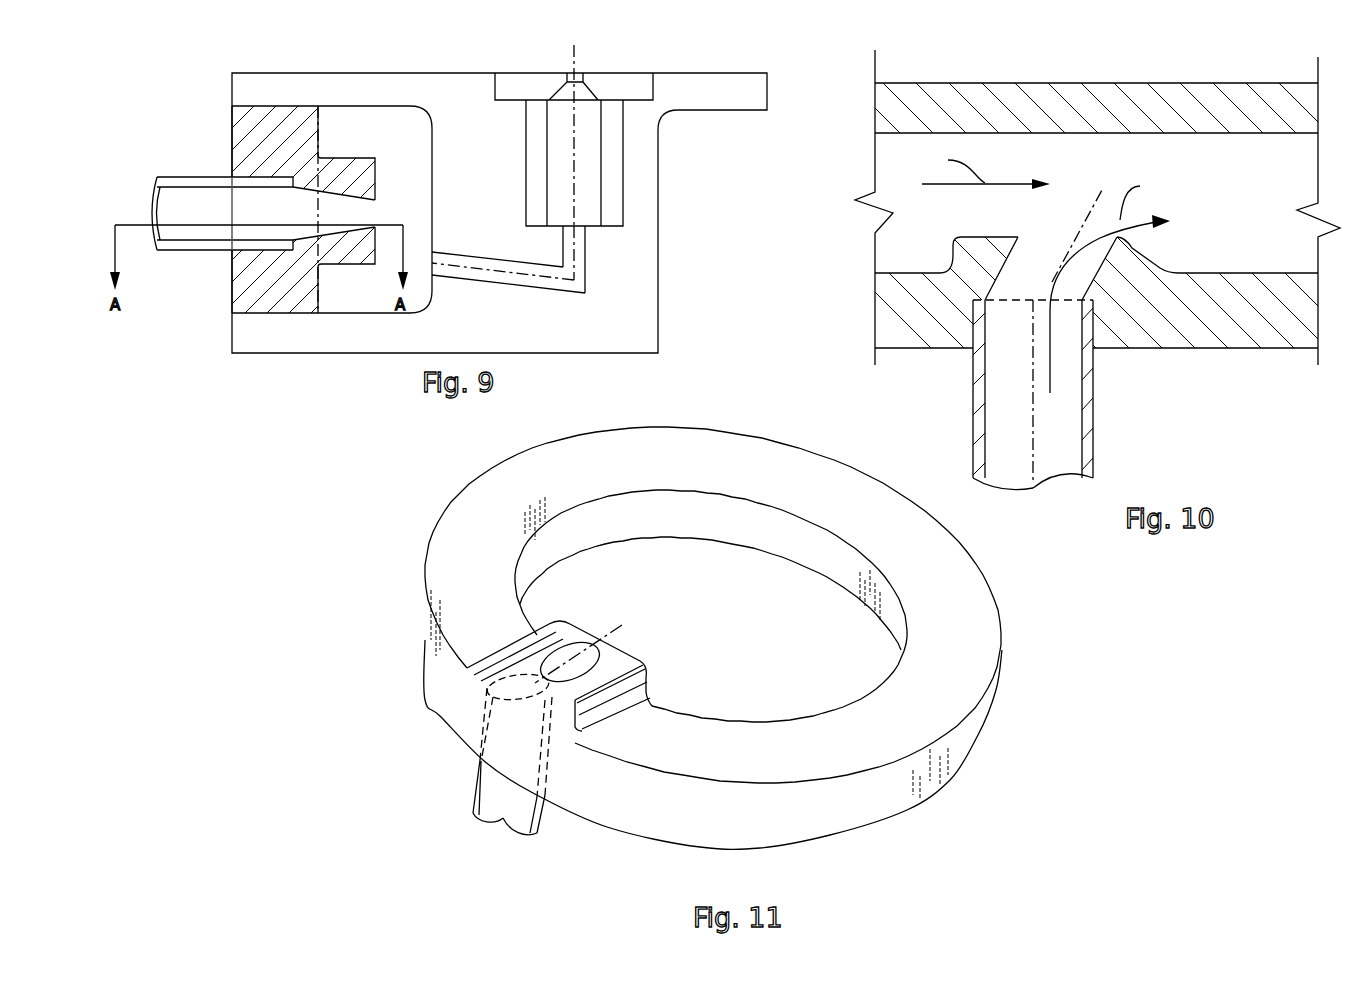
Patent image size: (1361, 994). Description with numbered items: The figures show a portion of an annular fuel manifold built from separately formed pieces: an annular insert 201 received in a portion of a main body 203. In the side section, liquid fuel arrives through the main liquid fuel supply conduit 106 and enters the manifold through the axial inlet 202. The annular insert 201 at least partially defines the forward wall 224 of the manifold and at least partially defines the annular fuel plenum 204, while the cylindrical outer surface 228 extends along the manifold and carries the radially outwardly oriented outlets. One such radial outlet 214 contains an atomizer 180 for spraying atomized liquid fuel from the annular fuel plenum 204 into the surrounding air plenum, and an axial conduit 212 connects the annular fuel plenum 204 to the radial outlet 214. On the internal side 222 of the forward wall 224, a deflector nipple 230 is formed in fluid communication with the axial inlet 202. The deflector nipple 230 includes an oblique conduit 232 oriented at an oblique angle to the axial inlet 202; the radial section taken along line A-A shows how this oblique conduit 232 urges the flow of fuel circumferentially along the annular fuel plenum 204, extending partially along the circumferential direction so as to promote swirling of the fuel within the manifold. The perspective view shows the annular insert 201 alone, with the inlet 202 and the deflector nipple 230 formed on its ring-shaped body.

In FIG. 9, the main liquid fuel supply conduit 106 is at (172, 183).
In FIG. 10, the main liquid fuel supply conduit 106 is at (1090, 430).
In FIG. 11, the main liquid fuel supply conduit 106 is at (502, 814).
In FIG. 9, the atomizer 180 is at (617, 85).
In FIG. 9, the annular insert 201 is at (275, 298).
In FIG. 10, the annular insert 201 is at (1230, 318).
In FIG. 11, the annular insert 201 is at (1022, 720).
In FIG. 9, the axial inlet 202 is at (250, 186).
In FIG. 10, the axial inlet 202 is at (975, 330).
In FIG. 9, the main body 203 is at (627, 323).
In FIG. 10, the main body 203 is at (1027, 108).
In FIG. 9, the annular fuel plenum 204 is at (383, 127).
In FIG. 10, the annular fuel plenum 204 is at (1178, 160).
In FIG. 9, the axial conduit 212 is at (503, 277).
In FIG. 9, the radial outlet 214 is at (577, 266).
In FIG. 11, the internal side 222 is at (658, 474).
In FIG. 9, the forward wall 224 is at (235, 290).
In FIG. 9, the cylindrical outer surface 228 is at (289, 70).
In FIG. 9, the deflector nipple 230 is at (343, 177).
In FIG. 11, the deflector nipple 230 is at (567, 633).
In FIG. 9, the oblique conduit 232 is at (362, 238).
In FIG. 10, the oblique conduit 232 is at (1030, 263).